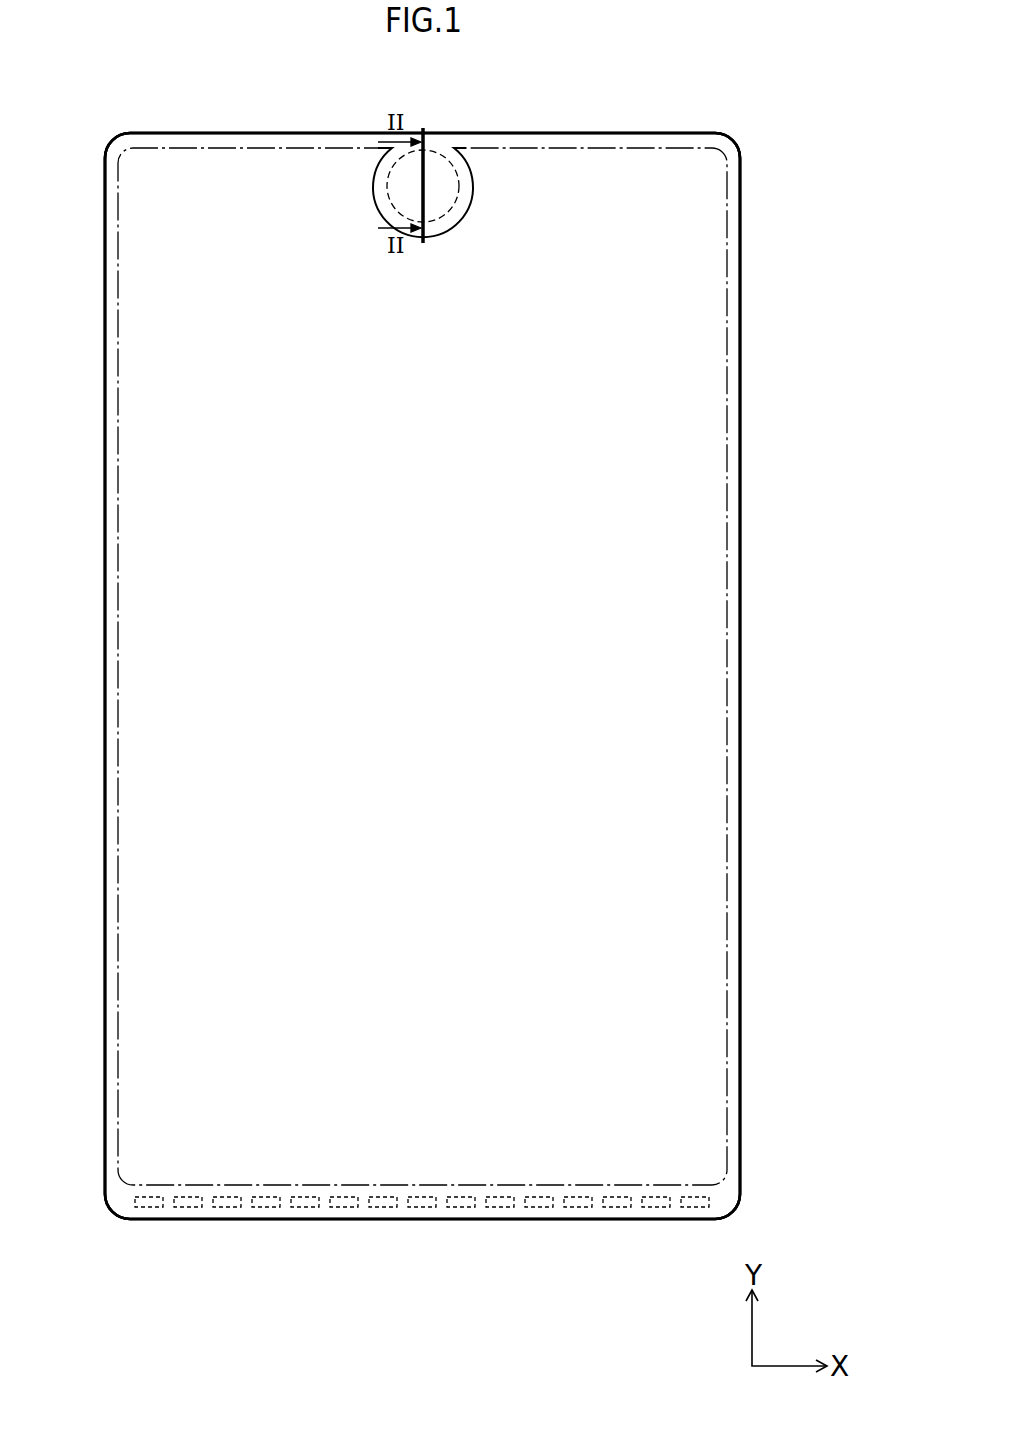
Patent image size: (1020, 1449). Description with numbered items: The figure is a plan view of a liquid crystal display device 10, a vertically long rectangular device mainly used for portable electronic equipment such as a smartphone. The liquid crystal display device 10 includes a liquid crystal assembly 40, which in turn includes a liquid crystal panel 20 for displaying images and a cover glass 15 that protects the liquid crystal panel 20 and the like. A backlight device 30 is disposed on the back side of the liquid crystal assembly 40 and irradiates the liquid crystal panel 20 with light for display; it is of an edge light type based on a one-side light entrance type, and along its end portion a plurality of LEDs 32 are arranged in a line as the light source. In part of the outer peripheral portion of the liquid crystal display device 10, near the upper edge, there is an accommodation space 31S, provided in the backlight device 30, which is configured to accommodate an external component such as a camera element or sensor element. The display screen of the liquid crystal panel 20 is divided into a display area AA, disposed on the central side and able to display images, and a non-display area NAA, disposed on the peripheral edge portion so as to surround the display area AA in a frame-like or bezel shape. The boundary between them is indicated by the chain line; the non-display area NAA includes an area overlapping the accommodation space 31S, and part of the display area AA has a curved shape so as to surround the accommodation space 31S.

The liquid crystal display device 10 is at (677, 90).
The cover glass 15 is at (692, 223).
The liquid crystal panel 20 is at (692, 313).
The backlight device 30 is at (692, 417).
The liquid crystal assembly 40 is at (692, 368).
The accommodation space 31S is at (440, 170).
The LEDs 32 is at (579, 1206).
The non-display area NAA is at (108, 188).
The display area AA is at (126, 263).